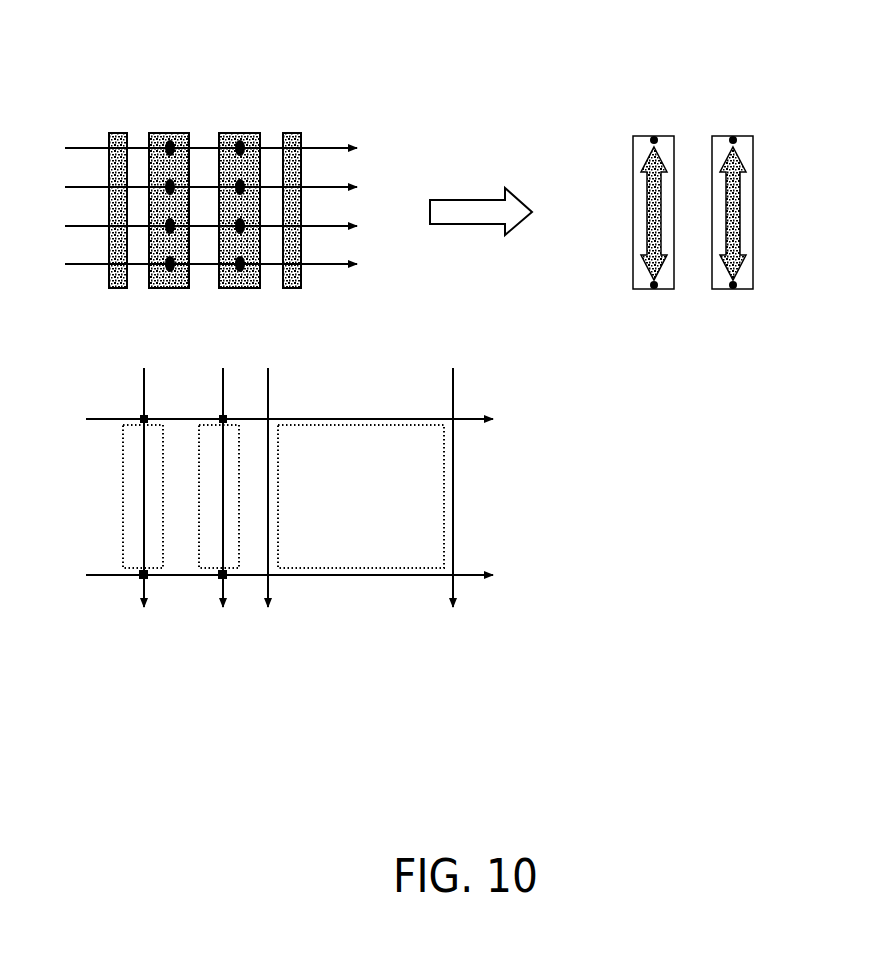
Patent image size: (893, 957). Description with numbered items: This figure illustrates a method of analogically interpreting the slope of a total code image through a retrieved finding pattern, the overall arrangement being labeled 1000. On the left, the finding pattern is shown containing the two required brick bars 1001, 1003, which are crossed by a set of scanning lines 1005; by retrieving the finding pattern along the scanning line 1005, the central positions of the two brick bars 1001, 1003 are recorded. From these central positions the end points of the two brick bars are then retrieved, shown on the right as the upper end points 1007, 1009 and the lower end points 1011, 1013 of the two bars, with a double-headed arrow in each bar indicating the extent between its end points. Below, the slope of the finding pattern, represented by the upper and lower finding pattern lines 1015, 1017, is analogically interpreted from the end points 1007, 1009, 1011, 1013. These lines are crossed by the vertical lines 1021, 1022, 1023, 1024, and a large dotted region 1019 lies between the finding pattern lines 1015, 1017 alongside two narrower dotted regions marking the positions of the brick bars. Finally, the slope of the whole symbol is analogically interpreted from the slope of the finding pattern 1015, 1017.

The display pixel structure 1000 is at (760, 648).
The brick bar 1001 is at (167, 132).
The brick bar 1003 is at (238, 132).
The scanning line 1005 is at (327, 148).
The end point 1007 is at (654, 137).
The end point 1009 is at (733, 137).
The end point 1011 is at (654, 288).
The end point 1013 is at (733, 288).
The finding pattern 1015 is at (300, 418).
The finding pattern 1017 is at (102, 577).
The large dotted region 1019 is at (390, 442).
The first column line 1021 is at (144, 609).
The second column line 1022 is at (223, 609).
The third column line 1023 is at (268, 609).
The fourth column line 1024 is at (453, 609).